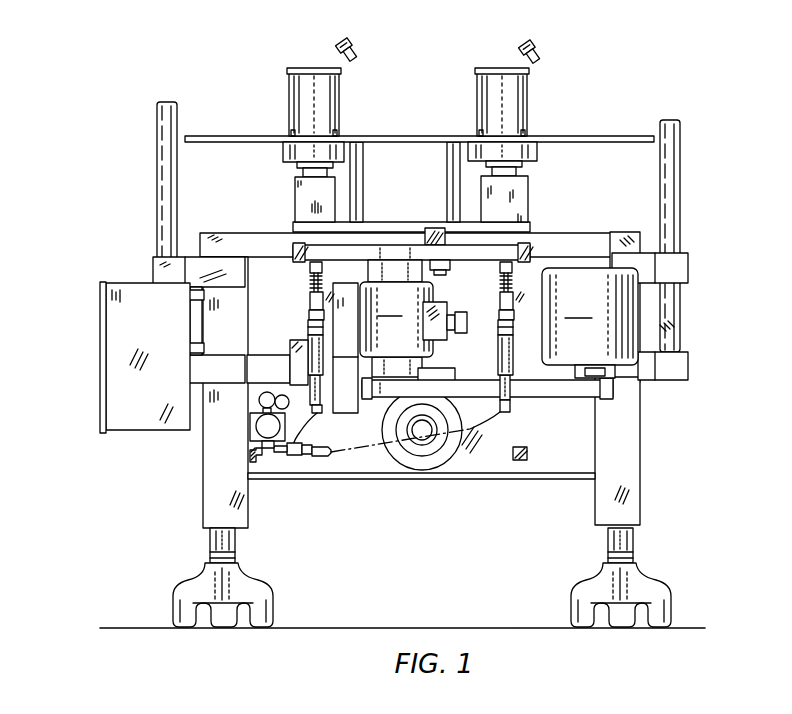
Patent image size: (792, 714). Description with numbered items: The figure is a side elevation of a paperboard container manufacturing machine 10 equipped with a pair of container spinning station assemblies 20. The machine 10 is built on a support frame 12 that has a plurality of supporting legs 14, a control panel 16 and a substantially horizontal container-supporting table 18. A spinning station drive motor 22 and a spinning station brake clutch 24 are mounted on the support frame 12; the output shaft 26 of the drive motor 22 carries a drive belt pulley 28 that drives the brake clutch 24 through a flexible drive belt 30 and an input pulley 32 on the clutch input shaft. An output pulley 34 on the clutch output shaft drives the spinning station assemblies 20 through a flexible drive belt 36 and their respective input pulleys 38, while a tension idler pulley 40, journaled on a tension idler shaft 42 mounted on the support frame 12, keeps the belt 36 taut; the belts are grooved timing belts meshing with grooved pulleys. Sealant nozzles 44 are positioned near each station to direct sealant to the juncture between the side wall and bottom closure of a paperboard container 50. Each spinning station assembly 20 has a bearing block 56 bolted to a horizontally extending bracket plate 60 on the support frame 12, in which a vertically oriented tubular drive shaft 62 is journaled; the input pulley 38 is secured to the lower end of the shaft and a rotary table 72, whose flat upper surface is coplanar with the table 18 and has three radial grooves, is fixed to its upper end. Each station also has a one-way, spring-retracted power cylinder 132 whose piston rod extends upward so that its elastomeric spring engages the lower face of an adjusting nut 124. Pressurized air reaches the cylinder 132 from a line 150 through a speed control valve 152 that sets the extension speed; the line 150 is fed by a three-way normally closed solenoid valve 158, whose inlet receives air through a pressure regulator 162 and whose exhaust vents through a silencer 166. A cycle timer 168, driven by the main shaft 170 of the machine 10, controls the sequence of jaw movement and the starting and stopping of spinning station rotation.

The paperboard container manufacturing machine 10 is at (712, 89).
The support frame 12 is at (640, 430).
The supporting legs 14 is at (236, 543).
The control panel 16 is at (100, 388).
The container-supporting table 18 is at (598, 136).
The container spinning station assemblies 20 is at (291, 173).
The spinning station drive motor 22 is at (590, 316).
The spinning station brake clutch 24 is at (400, 336).
The output shaft 26 is at (606, 378).
The drive belt pulley 28 is at (569, 398).
The flexible drive belt 30 is at (548, 396).
The input pulley 32 is at (370, 400).
The output pulley 34 is at (396, 244).
The flexible drive belt 36 is at (362, 249).
The input pulleys 38 is at (296, 246).
The tension idler pulley 40 is at (452, 266).
The tension idler shaft 42 is at (433, 240).
The sealant nozzles 44 is at (352, 50).
The paperboard container 50 is at (339, 110).
The bearing block 56 is at (295, 190).
The bracket plate 60 is at (416, 244).
The tubular drive shaft 62 is at (308, 268).
The rotary table 72 is at (283, 151).
The adjusting nut 124 is at (309, 303).
The power cylinder 132 is at (308, 331).
The line 150 is at (296, 472).
The speed control valve 152 is at (307, 392).
The solenoid valve 158 is at (260, 432).
The pressure regulator 162 is at (260, 404).
The silencer 166 is at (302, 445).
The cycle timer 168 is at (248, 357).
The main shaft 170 is at (422, 440).